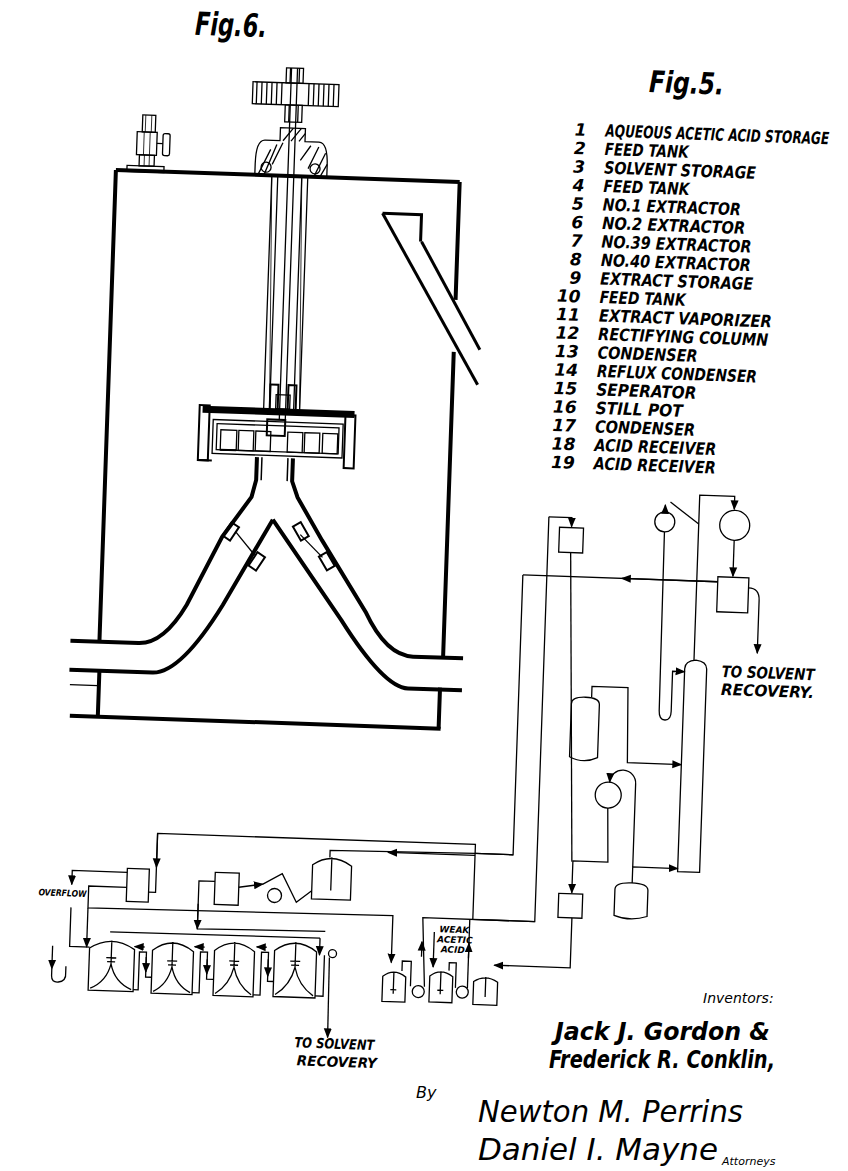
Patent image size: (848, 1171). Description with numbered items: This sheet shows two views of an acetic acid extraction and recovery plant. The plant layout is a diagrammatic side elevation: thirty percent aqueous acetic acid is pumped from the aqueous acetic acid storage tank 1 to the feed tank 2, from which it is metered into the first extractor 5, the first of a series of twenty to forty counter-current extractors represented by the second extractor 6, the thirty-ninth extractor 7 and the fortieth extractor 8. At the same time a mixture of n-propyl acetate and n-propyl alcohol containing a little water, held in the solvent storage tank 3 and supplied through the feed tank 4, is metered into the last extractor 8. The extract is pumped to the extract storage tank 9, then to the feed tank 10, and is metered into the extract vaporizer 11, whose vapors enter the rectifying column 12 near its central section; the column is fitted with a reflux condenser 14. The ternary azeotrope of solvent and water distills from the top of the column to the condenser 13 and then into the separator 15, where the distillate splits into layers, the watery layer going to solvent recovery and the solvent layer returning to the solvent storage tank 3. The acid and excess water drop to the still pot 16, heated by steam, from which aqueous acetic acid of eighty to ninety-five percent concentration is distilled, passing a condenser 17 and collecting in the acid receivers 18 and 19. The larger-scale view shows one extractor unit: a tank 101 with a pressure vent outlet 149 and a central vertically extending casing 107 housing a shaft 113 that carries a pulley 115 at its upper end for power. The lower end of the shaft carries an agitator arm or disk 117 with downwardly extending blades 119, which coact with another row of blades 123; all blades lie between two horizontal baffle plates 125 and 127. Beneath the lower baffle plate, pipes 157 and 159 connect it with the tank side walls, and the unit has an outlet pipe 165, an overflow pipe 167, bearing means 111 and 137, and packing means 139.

In FIG. 5, the aqueous acetic acid storage tank 1 is at (446, 1005).
In FIG. 5, the feed tank 2 is at (146, 878).
In FIG. 5, the solvent storage tank 3 is at (354, 880).
In FIG. 5, the feed tank 4 is at (240, 878).
In FIG. 5, the No. 1 extractor 5 is at (112, 1005).
In FIG. 5, the No. 2 extractor 6 is at (184, 1006).
In FIG. 5, the No. 39 extractor 7 is at (244, 1005).
In FIG. 5, the No. 40 extractor 8 is at (306, 1004).
In FIG. 5, the extract storage tank 9 is at (398, 1006).
In FIG. 5, the feed tank 10 is at (574, 544).
In FIG. 5, the extract vaporizer 11 is at (580, 758).
In FIG. 5, the rectifying column 12 is at (710, 806).
In FIG. 5, the condenser 13 is at (741, 518).
In FIG. 5, the reflux condenser 14 is at (650, 525).
In FIG. 5, the separator 15 is at (726, 606).
In FIG. 5, the still pot 16 is at (658, 886).
In FIG. 5, the condenser 17 is at (597, 800).
In FIG. 5, the acid receiver 18 is at (586, 912).
In FIG. 5, the acid receiver 19 is at (504, 990).
In FIG. 6, the tank 101 is at (265, 449).
In FIG. 6, the casing 107 is at (272, 220).
In FIG. 6, the bearing means 111 is at (318, 158).
In FIG. 6, the shaft 113 is at (295, 266).
In FIG. 6, the pulley 115 is at (337, 92).
In FIG. 6, the agitator arm or disk 117 is at (305, 424).
In FIG. 6, the blades 119 is at (318, 445).
In FIG. 6, the blades 123 is at (244, 445).
In FIG. 6, the baffle plate 125 is at (210, 462).
In FIG. 6, the baffle plate 127 is at (236, 412).
In FIG. 6, the bearing means 137 is at (299, 397).
In FIG. 6, the packing means 139 is at (273, 400).
In FIG. 6, the pressure vent outlet 149 is at (156, 128).
In FIG. 6, the pipe 157 is at (222, 600).
In FIG. 6, the pipe 159 is at (322, 612).
In FIG. 6, the outlet pipe 165 is at (92, 714).
In FIG. 6, the overflow pipe 167 is at (395, 214).